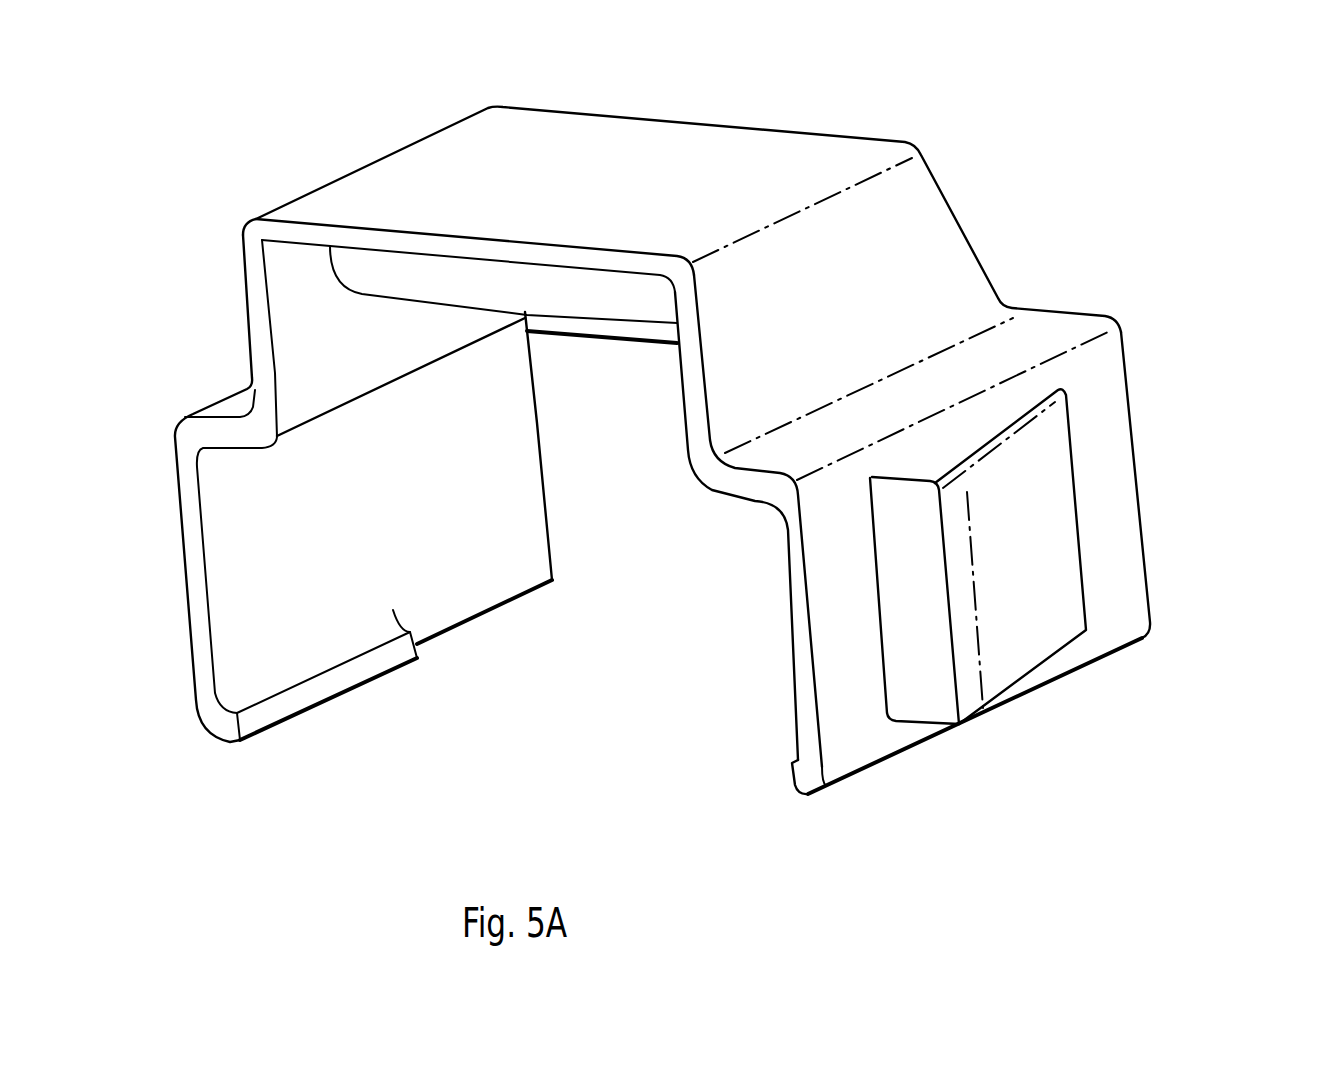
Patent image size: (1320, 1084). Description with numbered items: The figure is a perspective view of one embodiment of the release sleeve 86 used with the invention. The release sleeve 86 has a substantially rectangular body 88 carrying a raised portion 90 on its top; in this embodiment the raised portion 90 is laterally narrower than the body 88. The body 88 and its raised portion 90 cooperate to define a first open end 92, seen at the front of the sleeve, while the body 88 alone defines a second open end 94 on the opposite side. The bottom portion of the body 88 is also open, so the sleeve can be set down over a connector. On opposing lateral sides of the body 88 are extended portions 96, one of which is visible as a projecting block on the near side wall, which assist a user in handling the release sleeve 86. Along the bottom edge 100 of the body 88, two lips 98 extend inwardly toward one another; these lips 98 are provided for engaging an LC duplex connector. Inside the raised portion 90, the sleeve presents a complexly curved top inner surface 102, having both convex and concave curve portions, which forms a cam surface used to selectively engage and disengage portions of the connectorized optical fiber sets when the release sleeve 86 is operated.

The release sleeve 86 is at (398, 121).
The body 88 is at (1110, 483).
The raised portion 90 is at (937, 246).
The first open end 92 is at (787, 598).
The second open end 94 is at (535, 420).
The extended portions 96 is at (1039, 577).
The lips 98 is at (328, 686).
The bottom edge 100 is at (467, 622).
The curved top inner surface 102 is at (405, 282).